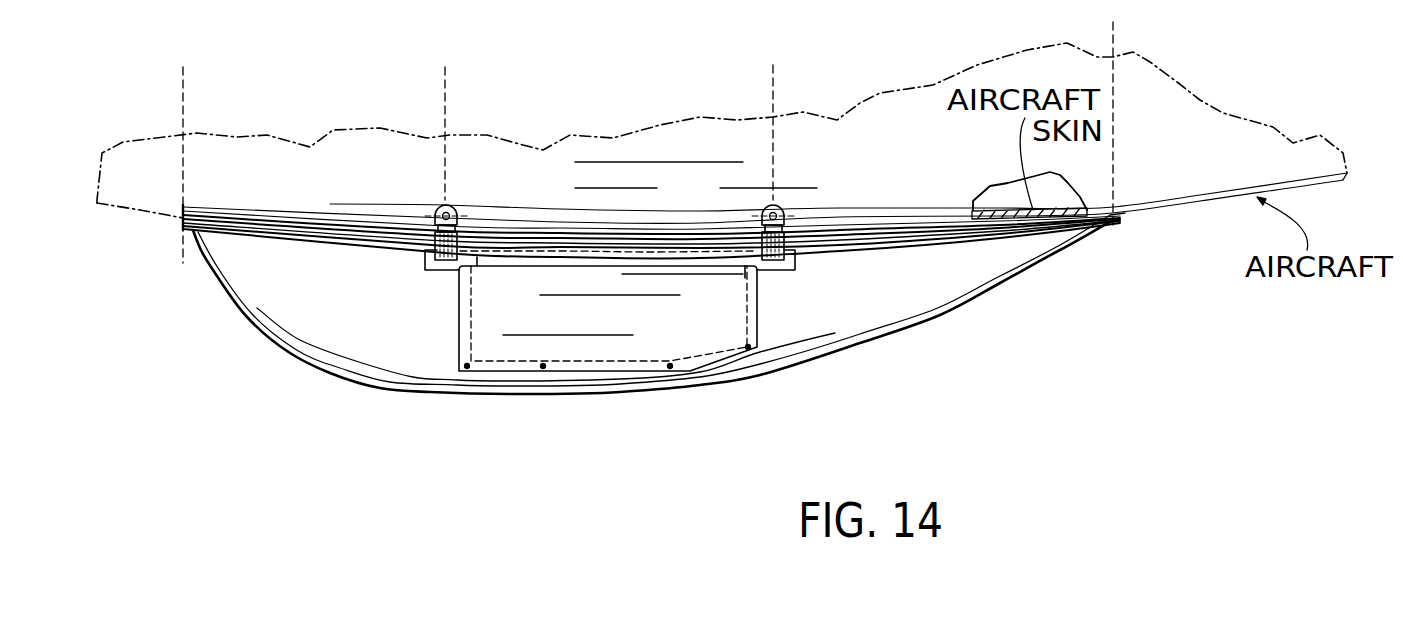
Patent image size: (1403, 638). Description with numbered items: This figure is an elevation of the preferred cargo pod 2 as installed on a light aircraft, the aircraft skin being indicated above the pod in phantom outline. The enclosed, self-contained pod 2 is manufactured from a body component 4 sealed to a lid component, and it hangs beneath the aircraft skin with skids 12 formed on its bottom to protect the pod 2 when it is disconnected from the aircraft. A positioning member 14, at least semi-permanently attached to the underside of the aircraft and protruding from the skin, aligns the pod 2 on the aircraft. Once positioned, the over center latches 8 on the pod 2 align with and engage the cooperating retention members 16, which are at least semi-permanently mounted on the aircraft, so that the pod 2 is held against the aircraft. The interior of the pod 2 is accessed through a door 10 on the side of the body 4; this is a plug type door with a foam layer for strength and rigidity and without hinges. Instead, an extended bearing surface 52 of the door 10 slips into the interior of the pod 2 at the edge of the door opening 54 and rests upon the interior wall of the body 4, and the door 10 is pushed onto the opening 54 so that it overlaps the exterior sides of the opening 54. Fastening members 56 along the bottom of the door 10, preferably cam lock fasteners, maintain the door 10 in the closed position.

The cargo pod 2 is at (895, 370).
The body component 4 is at (987, 295).
The over center latches 8 is at (425, 258).
The door 10 is at (633, 335).
The skids 12 is at (623, 390).
The positioning member 14 is at (1128, 218).
The retention members 16 is at (448, 207).
The extended bearing surface 52 is at (663, 257).
The door opening 54 is at (472, 305).
The fastening members 56 is at (467, 369).